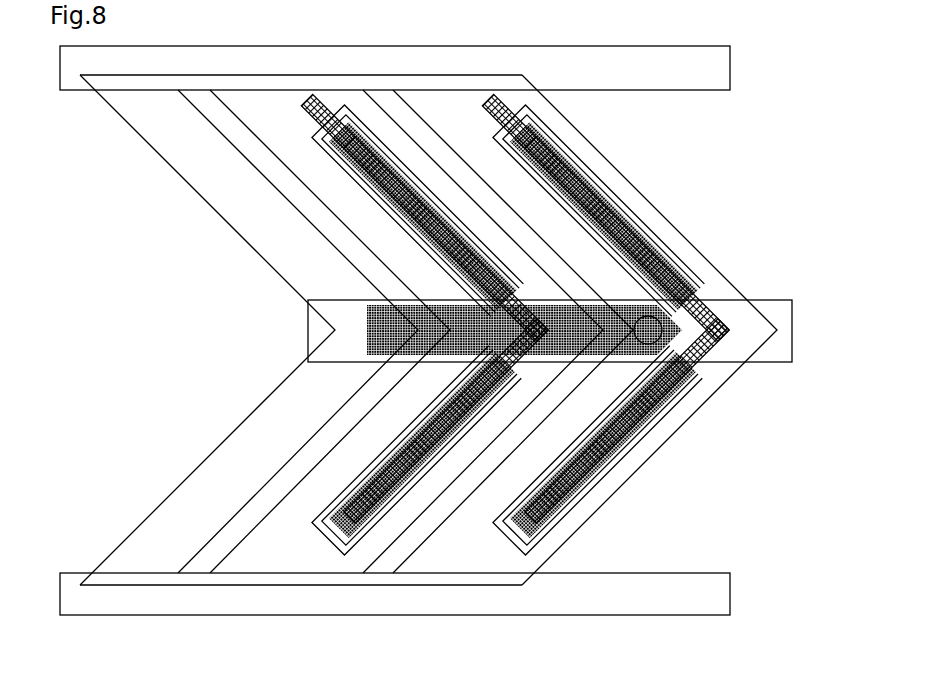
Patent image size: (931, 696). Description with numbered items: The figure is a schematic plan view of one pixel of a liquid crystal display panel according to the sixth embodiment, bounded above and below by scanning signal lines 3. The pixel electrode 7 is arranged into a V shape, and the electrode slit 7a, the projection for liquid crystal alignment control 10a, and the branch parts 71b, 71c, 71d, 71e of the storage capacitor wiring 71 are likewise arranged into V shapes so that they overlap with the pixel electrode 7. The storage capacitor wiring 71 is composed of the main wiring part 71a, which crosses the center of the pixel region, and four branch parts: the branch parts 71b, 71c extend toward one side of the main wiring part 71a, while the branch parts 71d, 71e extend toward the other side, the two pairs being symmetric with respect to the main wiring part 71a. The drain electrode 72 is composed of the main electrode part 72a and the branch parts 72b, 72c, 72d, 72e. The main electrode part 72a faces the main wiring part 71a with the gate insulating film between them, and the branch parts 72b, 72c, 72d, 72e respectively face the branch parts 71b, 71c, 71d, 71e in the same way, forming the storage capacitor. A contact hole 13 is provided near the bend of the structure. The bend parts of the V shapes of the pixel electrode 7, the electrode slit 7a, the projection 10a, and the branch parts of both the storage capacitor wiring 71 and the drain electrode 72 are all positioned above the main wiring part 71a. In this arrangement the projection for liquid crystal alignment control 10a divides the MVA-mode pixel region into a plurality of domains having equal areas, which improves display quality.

The scanning signal line 3 is at (730, 67).
The pixel electrode 7 is at (133, 129).
The electrode slit 7a is at (428, 126).
The projection for liquid crystal alignment control 10a is at (492, 101).
The contact hole 13 is at (656, 344).
The storage capacitor wiring 71 is at (604, 330).
The main wiring part of storage capacitor wiring 71a is at (786, 346).
The branch part of storage capacitor wiring 71b is at (578, 442).
The branch part of storage capacitor wiring 71c is at (655, 230).
The branch part of storage capacitor wiring 71d is at (574, 448).
The branch part of storage capacitor wiring 71e is at (497, 165).
The drain electrode 72 is at (365, 330).
The main electrode part of drain electrode 72a is at (387, 330).
The branch part of drain electrode 72b is at (435, 465).
The branch part of drain electrode 72c is at (352, 178).
The branch part of drain electrode 72d is at (410, 432).
The branch part of drain electrode 72e is at (431, 192).